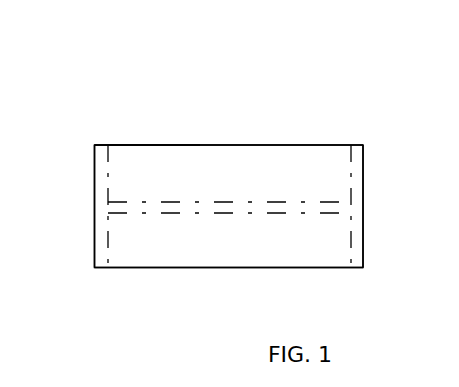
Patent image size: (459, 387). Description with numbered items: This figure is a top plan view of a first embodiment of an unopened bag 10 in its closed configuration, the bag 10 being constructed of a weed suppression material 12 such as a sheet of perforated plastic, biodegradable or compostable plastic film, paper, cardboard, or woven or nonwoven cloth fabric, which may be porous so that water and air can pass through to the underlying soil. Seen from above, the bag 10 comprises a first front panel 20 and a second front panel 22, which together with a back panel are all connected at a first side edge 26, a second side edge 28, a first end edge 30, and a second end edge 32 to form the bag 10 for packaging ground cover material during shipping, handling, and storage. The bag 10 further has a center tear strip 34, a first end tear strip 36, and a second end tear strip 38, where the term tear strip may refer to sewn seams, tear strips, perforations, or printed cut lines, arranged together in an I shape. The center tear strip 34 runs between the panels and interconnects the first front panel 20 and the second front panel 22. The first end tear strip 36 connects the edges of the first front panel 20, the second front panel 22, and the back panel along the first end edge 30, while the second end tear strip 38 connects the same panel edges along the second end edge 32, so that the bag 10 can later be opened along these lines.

The bag 10 is at (376, 103).
The weed suppression material 12 is at (132, 145).
The first front panel 20 is at (195, 173).
The second front panel 22 is at (172, 243).
The first side edge 26 is at (270, 145).
The second side edge 28 is at (240, 268).
The first end edge 30 is at (363, 175).
The second end edge 32 is at (94, 168).
The center tear strip 34 is at (287, 207).
The first end tear strip 36 is at (352, 237).
The second end tear strip 38 is at (102, 237).